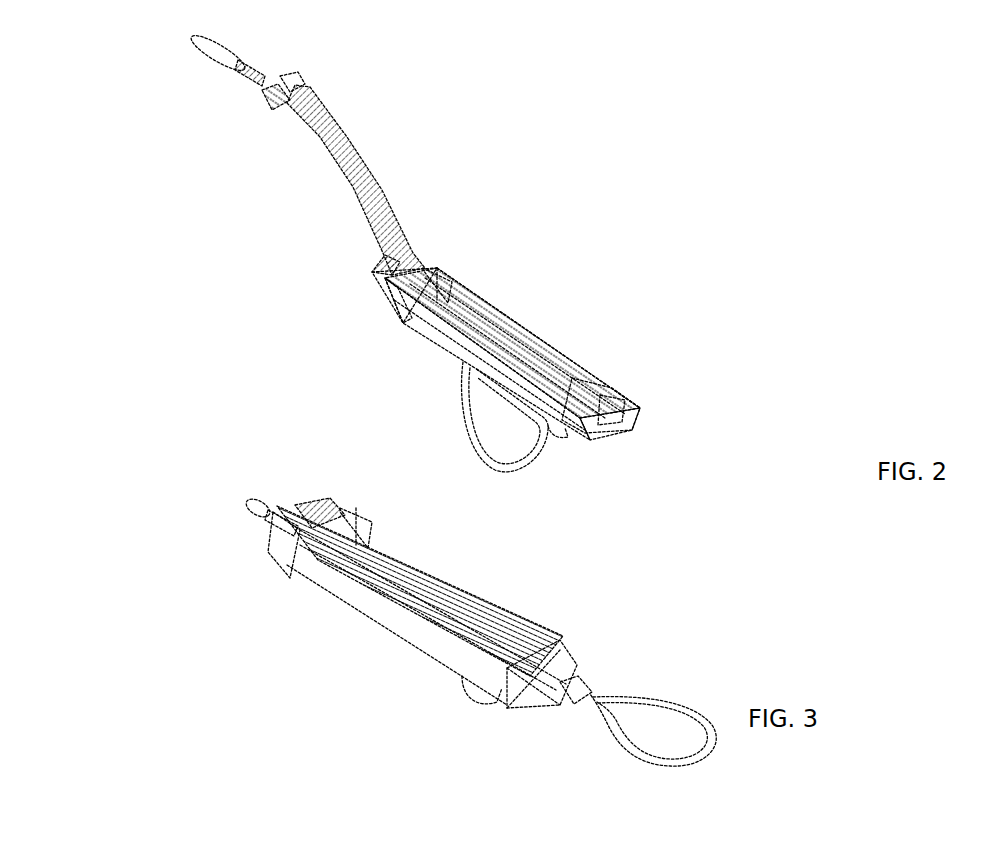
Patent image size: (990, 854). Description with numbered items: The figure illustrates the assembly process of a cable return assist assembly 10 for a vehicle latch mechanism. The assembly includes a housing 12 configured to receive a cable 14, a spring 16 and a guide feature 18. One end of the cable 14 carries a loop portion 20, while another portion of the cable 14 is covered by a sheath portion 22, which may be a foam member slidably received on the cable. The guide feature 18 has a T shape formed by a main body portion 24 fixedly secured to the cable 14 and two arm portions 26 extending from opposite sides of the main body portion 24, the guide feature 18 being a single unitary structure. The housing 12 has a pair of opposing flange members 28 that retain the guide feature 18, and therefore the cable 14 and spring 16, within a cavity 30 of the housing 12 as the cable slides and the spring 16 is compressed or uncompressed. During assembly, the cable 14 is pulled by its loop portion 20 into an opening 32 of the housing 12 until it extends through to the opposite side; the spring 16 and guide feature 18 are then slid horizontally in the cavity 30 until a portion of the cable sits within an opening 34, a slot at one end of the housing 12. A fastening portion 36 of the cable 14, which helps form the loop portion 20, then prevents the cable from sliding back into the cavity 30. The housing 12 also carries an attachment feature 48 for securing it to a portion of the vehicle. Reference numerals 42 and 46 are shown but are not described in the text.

In FIG. 2, the cable return assist assembly 10 is at (667, 247).
In FIG. 3, the cable return assist assembly 10 is at (617, 597).
In FIG. 2, the housing 12 is at (395, 320).
In FIG. 2, the cable 14 is at (413, 273).
In FIG. 2, the spring 16 is at (373, 177).
In FIG. 3, the spring 16 is at (423, 583).
In FIG. 2, the guide feature 18 is at (287, 70).
In FIG. 2, the loop portion 20 is at (548, 460).
In FIG. 3, the loop portion 20 is at (620, 757).
In FIG. 2, the sheath portion 22 is at (220, 62).
In FIG. 3, the sheath portion 22 is at (255, 510).
In FIG. 2, the main body portion 24 is at (253, 77).
In FIG. 3, the main body portion 24 is at (330, 547).
In FIG. 2, the arm portions 26 is at (267, 100).
In FIG. 2, the flange members 28 is at (510, 328).
In FIG. 3, the flange members 28 is at (370, 583).
In FIG. 2, the cavity 30 is at (557, 360).
In FIG. 2, the opening 32 is at (450, 283).
In FIG. 3, the opening 32 is at (350, 525).
In FIG. 2, the opening 34 is at (640, 417).
In FIG. 3, the fastening portion 36 is at (588, 682).
In FIG. 2, the front wall 42 is at (417, 293).
In FIG. 2, the seat 46 is at (387, 267).
In FIG. 3, the seat 46 is at (290, 512).
In FIG. 2, the attachment feature 48 is at (562, 431).
In FIG. 3, the attachment feature 48 is at (467, 707).